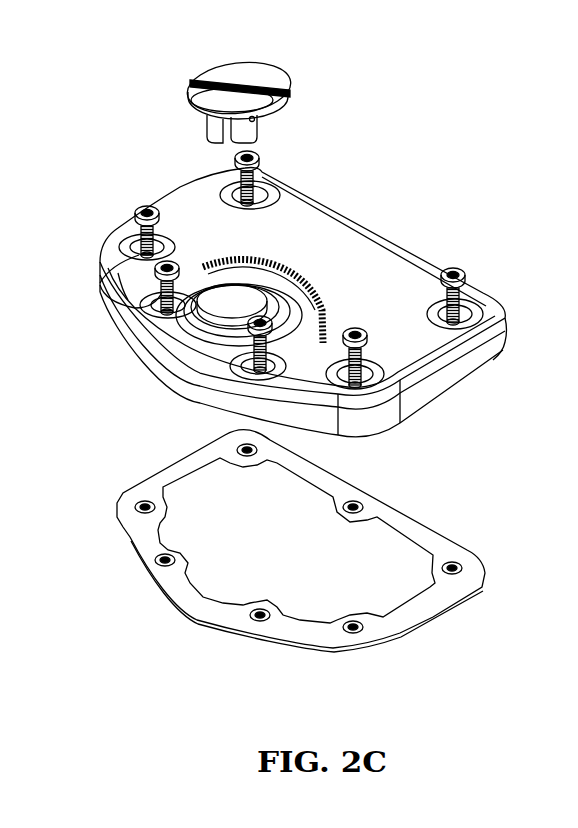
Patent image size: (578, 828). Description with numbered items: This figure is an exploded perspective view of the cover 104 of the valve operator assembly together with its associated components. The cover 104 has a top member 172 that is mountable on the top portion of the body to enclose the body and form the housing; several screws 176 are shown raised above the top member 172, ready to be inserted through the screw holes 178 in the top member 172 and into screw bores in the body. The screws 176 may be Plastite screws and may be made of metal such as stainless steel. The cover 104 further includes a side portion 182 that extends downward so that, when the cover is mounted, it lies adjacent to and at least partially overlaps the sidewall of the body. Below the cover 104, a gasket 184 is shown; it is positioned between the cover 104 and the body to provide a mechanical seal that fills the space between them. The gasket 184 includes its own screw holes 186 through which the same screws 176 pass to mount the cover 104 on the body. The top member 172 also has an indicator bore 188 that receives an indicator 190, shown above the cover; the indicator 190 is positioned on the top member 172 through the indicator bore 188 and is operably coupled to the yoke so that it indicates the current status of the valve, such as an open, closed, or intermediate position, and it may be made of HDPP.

The cover 104 is at (433, 248).
The top member 172 is at (322, 208).
The screws 176 is at (150, 205).
The screw holes 178 is at (106, 290).
The side portion 182 is at (500, 352).
The gasket 184 is at (420, 506).
The screw holes 186 is at (131, 542).
The indicator bore 188 is at (207, 313).
The indicator 190 is at (228, 64).